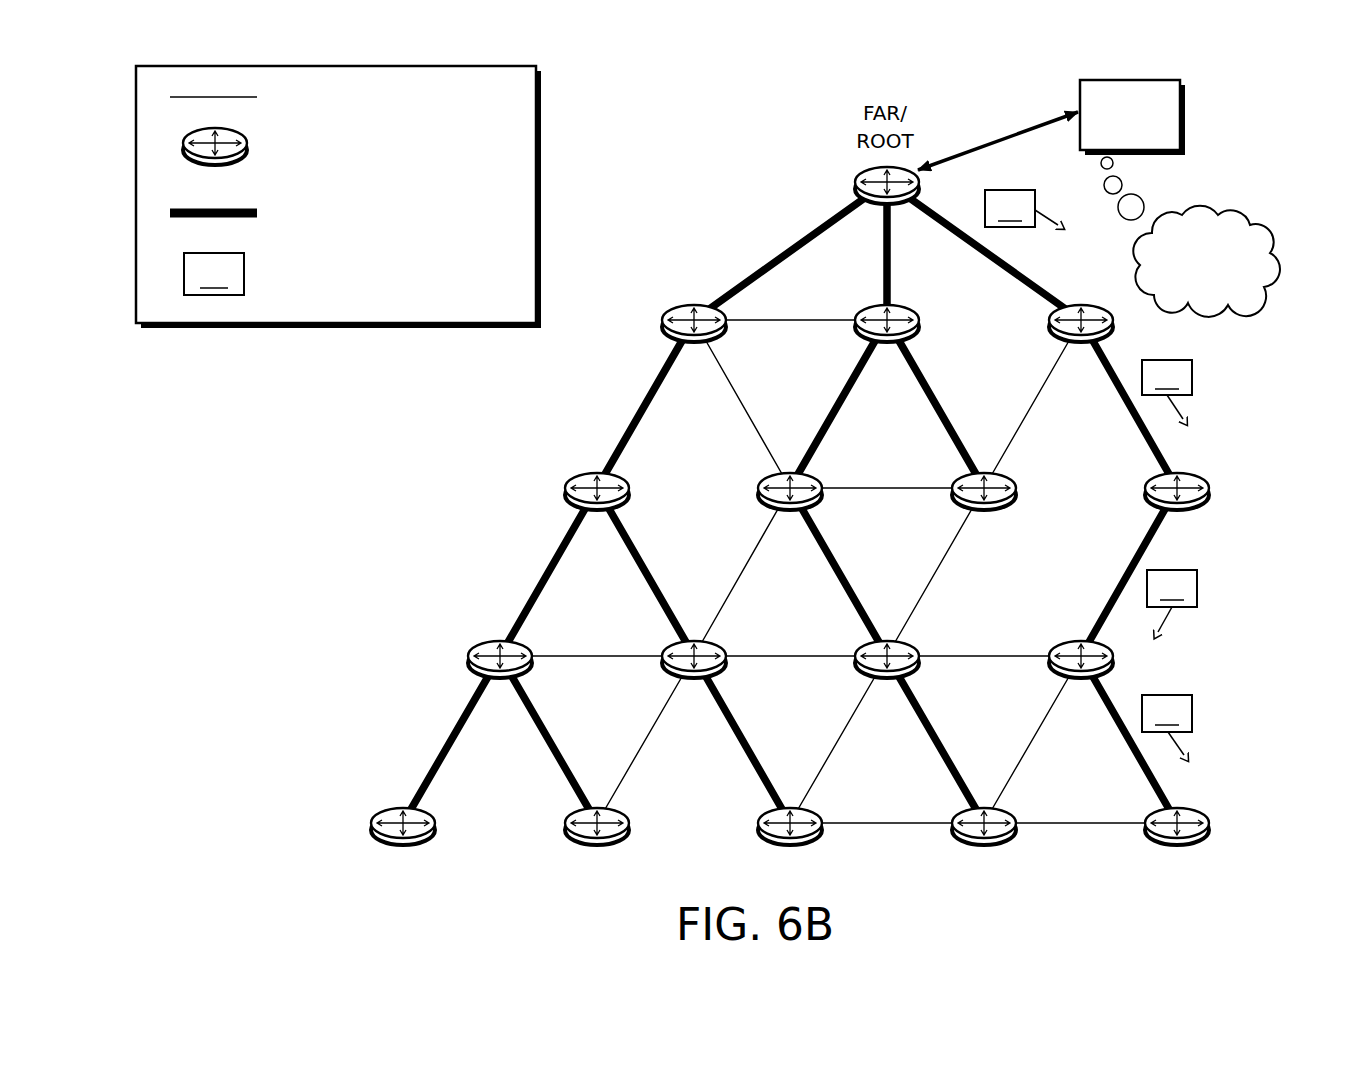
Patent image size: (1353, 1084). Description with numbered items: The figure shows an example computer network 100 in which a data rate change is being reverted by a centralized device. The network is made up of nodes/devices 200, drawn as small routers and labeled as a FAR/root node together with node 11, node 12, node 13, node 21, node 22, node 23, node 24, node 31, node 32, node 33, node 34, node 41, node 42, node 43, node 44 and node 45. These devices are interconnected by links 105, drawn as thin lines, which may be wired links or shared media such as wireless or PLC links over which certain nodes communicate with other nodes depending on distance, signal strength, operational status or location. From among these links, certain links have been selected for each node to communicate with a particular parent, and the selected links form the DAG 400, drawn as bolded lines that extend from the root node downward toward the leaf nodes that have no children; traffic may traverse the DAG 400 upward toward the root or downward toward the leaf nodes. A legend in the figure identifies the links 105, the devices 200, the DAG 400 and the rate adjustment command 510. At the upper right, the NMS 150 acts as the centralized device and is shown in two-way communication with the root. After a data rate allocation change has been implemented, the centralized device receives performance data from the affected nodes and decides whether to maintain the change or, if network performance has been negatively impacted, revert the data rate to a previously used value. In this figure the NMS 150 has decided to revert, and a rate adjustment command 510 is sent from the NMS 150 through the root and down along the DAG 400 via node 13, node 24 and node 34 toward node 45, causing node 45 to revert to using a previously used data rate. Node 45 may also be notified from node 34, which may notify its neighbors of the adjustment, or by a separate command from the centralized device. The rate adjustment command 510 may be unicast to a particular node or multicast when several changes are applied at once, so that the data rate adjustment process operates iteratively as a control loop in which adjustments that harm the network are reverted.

The computer network 100 is at (1270, 122).
The links 105 is at (673, 454).
The NMS 150 is at (1113, 140).
The nodes/devices 200 is at (301, 146).
The DAG 400 is at (673, 502).
The rate adjustment command 510 is at (690, 472).
The node 11 is at (694, 346).
The node 12 is at (887, 346).
The node 13 is at (1081, 346).
The node 21 is at (597, 513).
The node 22 is at (790, 513).
The node 23 is at (984, 513).
The node 24 is at (1177, 513).
The node 31 is at (500, 681).
The node 32 is at (694, 681).
The node 33 is at (887, 681).
The node 34 is at (1081, 681).
The node 41 is at (403, 849).
The node 42 is at (597, 849).
The node 43 is at (790, 849).
The node 44 is at (984, 849).
The node 45 is at (1177, 849).